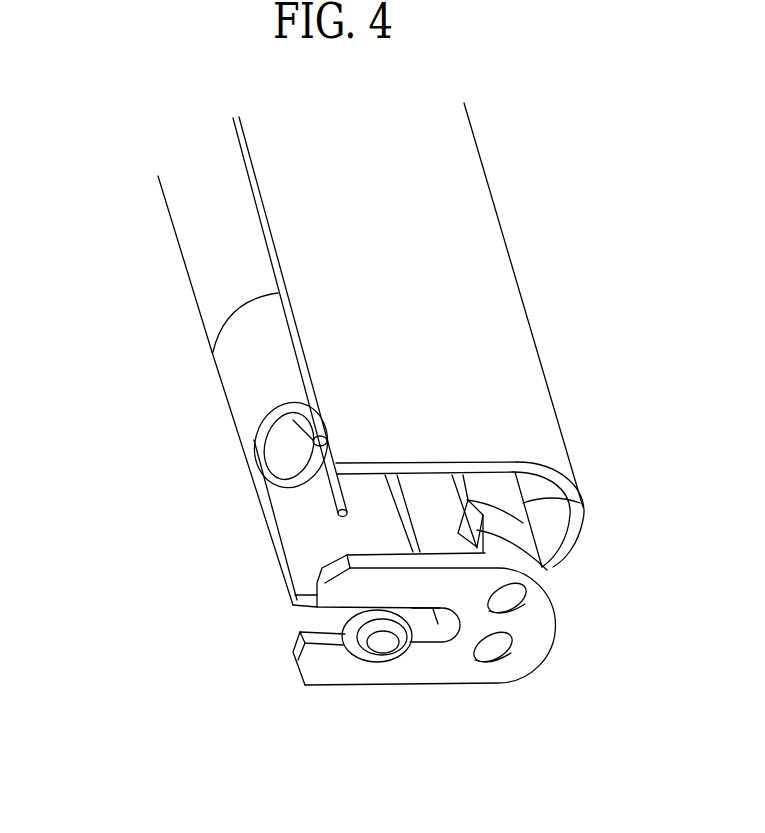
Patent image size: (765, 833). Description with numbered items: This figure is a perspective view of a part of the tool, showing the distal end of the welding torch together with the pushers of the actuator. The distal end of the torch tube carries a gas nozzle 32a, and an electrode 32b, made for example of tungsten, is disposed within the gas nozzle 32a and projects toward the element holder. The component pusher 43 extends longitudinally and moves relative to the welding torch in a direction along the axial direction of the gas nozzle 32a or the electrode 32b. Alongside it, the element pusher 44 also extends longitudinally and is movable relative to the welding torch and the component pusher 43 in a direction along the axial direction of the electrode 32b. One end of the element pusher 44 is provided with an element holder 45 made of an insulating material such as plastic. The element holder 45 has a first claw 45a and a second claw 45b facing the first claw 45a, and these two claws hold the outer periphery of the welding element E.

The gas nozzle 32a is at (198, 243).
The electrode 32b is at (340, 502).
The component pusher 43 is at (513, 265).
The element pusher 44 is at (585, 510).
The element holder 45 is at (533, 625).
The first claw 45a is at (340, 583).
The second claw 45b is at (313, 663).
The welding element E is at (382, 650).